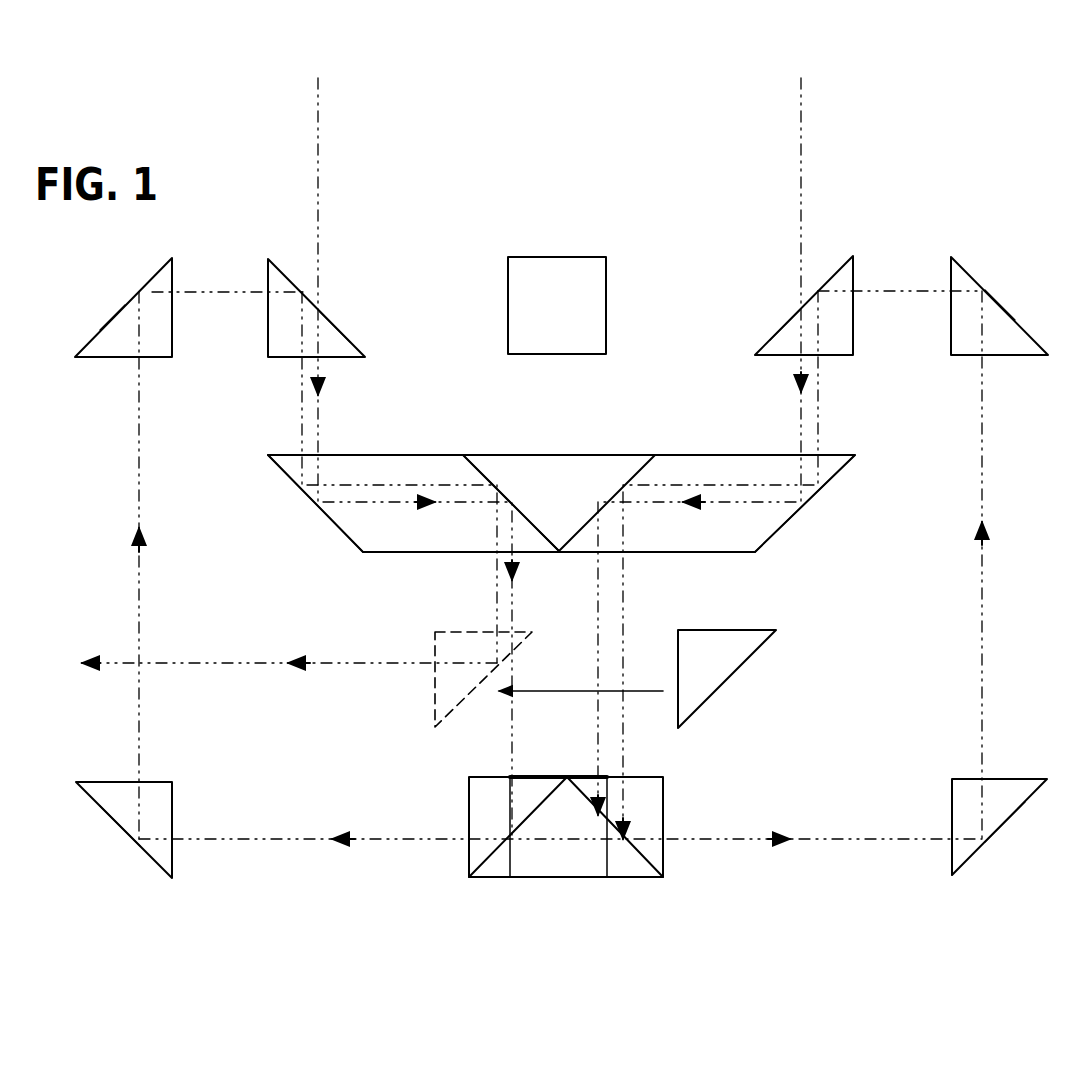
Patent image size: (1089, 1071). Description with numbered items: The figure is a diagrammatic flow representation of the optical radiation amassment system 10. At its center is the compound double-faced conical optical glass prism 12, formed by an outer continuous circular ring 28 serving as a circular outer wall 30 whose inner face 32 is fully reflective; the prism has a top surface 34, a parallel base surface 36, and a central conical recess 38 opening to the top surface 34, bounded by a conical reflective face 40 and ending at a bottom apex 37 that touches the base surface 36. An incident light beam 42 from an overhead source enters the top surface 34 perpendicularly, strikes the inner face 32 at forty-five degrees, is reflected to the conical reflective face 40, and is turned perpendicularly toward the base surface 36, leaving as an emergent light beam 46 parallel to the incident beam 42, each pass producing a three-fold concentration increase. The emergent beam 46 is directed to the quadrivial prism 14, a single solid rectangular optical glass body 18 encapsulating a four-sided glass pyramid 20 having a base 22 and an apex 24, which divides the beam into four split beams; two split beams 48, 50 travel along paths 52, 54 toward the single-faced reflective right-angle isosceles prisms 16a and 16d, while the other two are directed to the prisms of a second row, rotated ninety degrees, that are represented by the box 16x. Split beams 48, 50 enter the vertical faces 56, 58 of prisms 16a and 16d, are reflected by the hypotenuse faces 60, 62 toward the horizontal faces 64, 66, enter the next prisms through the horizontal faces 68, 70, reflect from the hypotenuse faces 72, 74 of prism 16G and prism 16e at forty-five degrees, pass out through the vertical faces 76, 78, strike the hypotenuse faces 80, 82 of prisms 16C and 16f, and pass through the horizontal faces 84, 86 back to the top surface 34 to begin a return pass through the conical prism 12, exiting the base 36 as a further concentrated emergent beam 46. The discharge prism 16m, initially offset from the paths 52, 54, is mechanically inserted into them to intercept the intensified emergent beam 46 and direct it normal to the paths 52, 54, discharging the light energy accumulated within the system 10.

The optical radiation amassment system 10 is at (255, 208).
The compound double-faced conical optical glass prism 12 is at (420, 427).
The quadrivial optical glass prism 14 is at (672, 800).
The single-faced reflective right-angle isosceles prism 16G is at (123, 305).
The single-faced reflective right-angle isosceles prism 16C is at (350, 288).
The box representing second row of prisms 16x is at (556, 247).
The single-faced reflective right-angle isosceles prism 16f is at (808, 284).
The single-faced reflective right-angle isosceles prism 16e is at (971, 367).
The single-faced reflective right-angle isosceles prism 16a is at (172, 768).
The single-faced reflective right-angle isosceles prism 16d is at (953, 768).
The discharge prism 16m is at (763, 671).
The rectangular optical glass body 18 is at (469, 792).
The four-sided optical glass pyramid 20 is at (566, 860).
The base 22 is at (588, 877).
The apex 24 is at (565, 776).
The outer continuous circular ring 28 is at (272, 458).
The circular outer wall 30 is at (300, 486).
The reflective inner face 32 is at (360, 550).
The top surface 34 is at (447, 455).
The base surface 36 is at (715, 553).
The bottom apex 37 is at (560, 552).
The central conical recess 38 is at (598, 455).
The conical reflective face 40 is at (522, 515).
The incident light beam 42 is at (322, 157).
The emergent light beam 46 is at (497, 600).
The split beam 48 is at (410, 839).
The split beam 50 is at (140, 450).
The path 52 is at (300, 410).
The path 54 is at (745, 482).
The vertical face 56 is at (172, 818).
The vertical face 58 is at (952, 870).
The reflective hypotenuse face 60 is at (125, 820).
The reflective hypotenuse face 62 is at (1012, 820).
The horizontal face 64 is at (116, 782).
The horizontal face 66 is at (1012, 779).
The horizontal face 68 is at (152, 358).
The horizontal face 70 is at (1000, 357).
The reflective hypotenuse face 72 is at (108, 310).
The reflective hypotenuse face 74 is at (1002, 308).
The vertical face 76 is at (172, 325).
The vertical face 78 is at (951, 330).
The reflective hypotenuse face 80 is at (345, 322).
The reflective hypotenuse face 82 is at (770, 325).
The horizontal face 84 is at (340, 358).
The horizontal face 86 is at (845, 357).